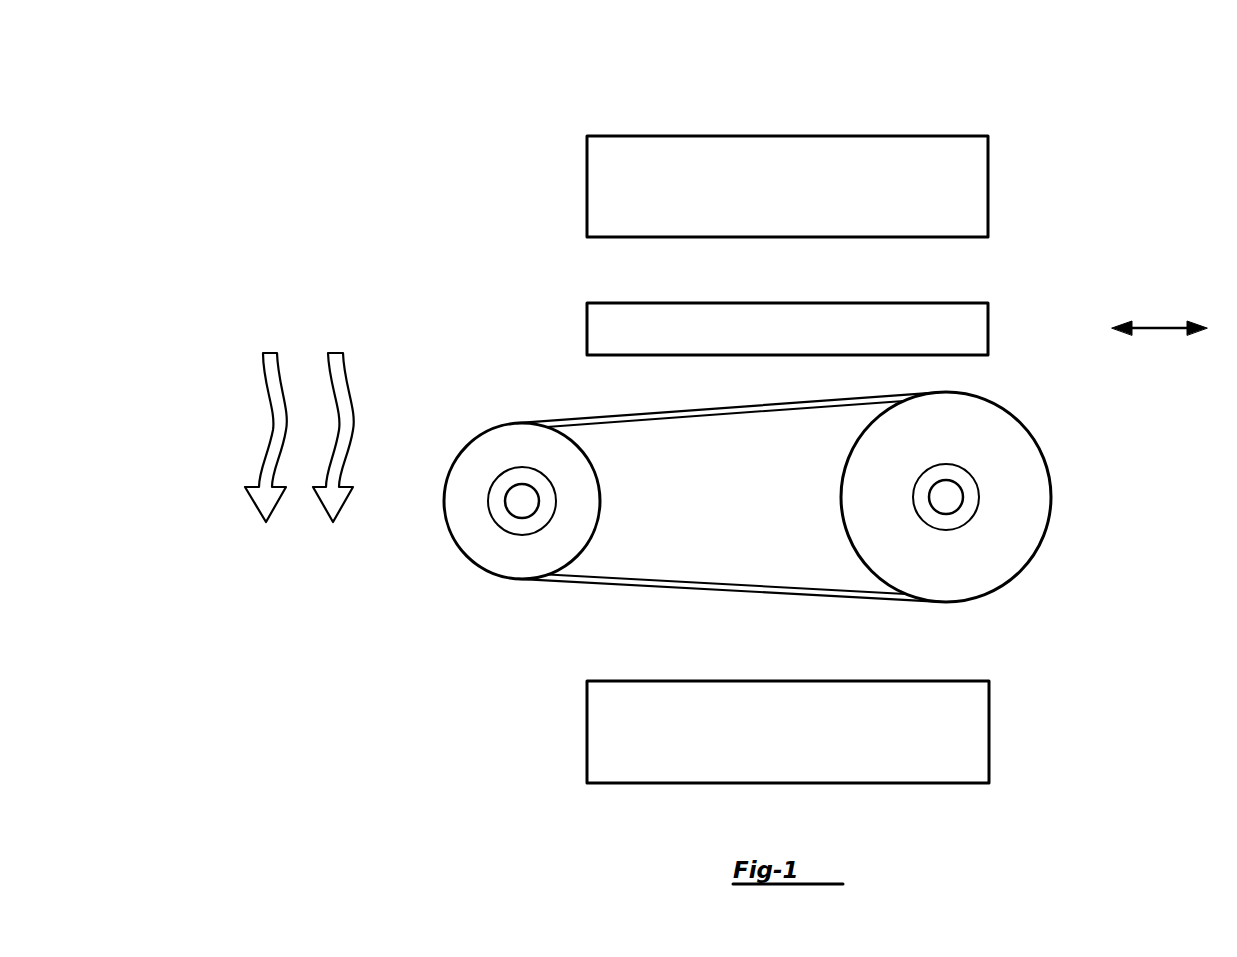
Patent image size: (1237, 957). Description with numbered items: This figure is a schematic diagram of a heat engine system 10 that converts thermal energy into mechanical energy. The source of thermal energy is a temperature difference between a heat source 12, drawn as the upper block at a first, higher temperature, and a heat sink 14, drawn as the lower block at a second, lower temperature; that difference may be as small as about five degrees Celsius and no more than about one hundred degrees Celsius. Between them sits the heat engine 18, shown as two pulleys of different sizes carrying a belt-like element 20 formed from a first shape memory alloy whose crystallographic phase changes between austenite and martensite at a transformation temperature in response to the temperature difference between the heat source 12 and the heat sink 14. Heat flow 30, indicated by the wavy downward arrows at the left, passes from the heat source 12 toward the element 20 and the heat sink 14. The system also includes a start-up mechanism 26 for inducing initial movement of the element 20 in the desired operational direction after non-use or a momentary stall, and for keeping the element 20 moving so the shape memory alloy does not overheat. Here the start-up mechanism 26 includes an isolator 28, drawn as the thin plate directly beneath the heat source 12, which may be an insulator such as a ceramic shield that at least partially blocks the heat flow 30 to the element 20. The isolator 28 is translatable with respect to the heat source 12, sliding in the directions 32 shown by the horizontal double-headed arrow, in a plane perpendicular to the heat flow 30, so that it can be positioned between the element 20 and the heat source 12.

The heat engine system 10 is at (596, 90).
The heat source 12 is at (988, 187).
The heat sink 14 is at (989, 729).
The heat engine 18 is at (706, 480).
The element 20 is at (718, 407).
The start-up mechanism 26 is at (788, 306).
The isolator 28 is at (988, 329).
The heat flow 30 is at (260, 387).
The sliding directions 32 is at (1158, 327).